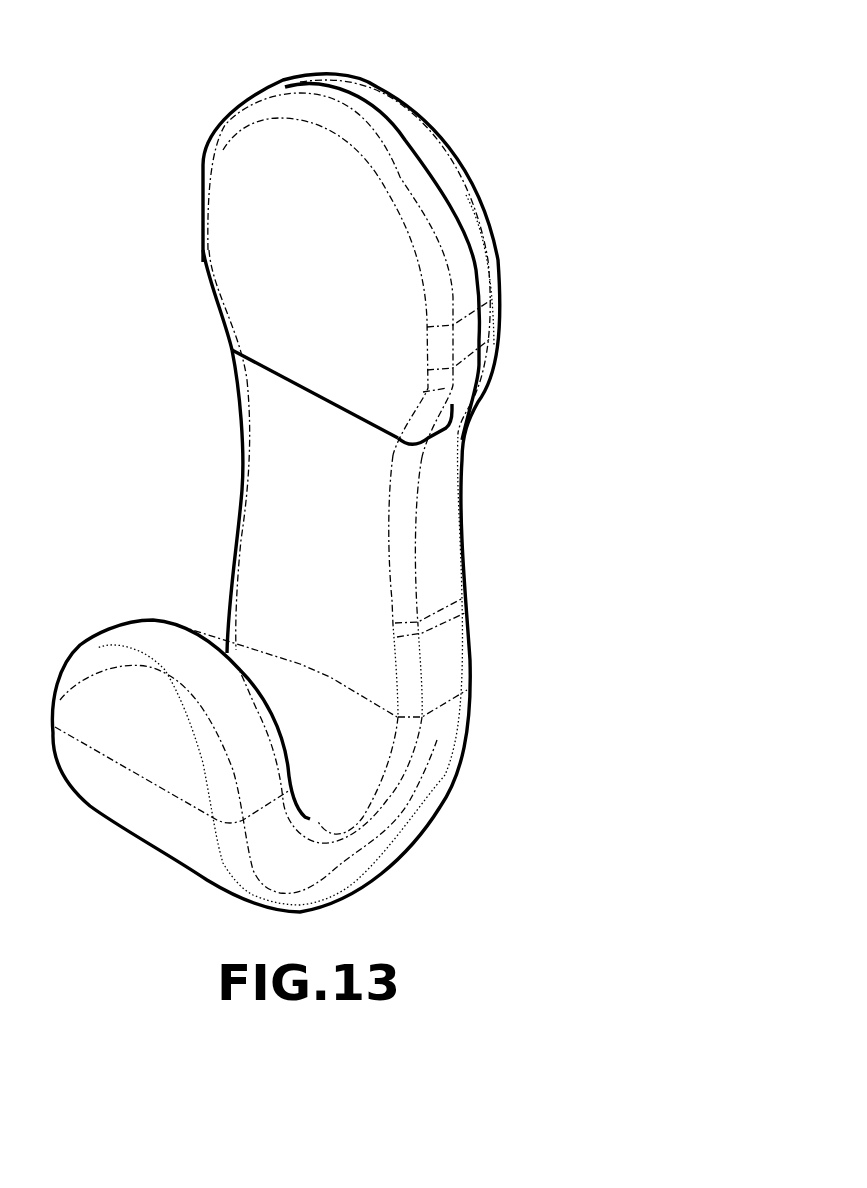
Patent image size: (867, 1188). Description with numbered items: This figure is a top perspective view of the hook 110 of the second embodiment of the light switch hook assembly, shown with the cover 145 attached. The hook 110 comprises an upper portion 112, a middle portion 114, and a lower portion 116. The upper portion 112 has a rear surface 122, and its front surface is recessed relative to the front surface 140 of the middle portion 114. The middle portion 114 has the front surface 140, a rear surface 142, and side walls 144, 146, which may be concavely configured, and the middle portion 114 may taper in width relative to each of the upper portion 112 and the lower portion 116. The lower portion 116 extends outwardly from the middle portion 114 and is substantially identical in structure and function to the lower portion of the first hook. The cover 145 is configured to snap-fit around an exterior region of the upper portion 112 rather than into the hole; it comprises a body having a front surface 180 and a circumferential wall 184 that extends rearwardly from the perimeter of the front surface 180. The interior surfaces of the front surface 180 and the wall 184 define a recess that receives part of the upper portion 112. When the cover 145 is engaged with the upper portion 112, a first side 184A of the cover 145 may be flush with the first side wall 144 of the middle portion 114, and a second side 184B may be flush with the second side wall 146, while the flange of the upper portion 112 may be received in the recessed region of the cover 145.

The hook 110 is at (524, 88).
The upper portion 112 is at (520, 212).
The middle portion 114 is at (500, 518).
The lower portion 116 is at (419, 880).
The rear surface 122 is at (428, 120).
The front surface 180 is at (348, 295).
The circumferential wall 184 is at (444, 186).
The first side 184A is at (220, 307).
The second side 184B is at (450, 407).
The cover 145 is at (264, 230).
The first side wall 144 is at (248, 473).
The front surface 140 is at (287, 513).
The rear surface 142 is at (465, 557).
The first side 146 is at (440, 588).